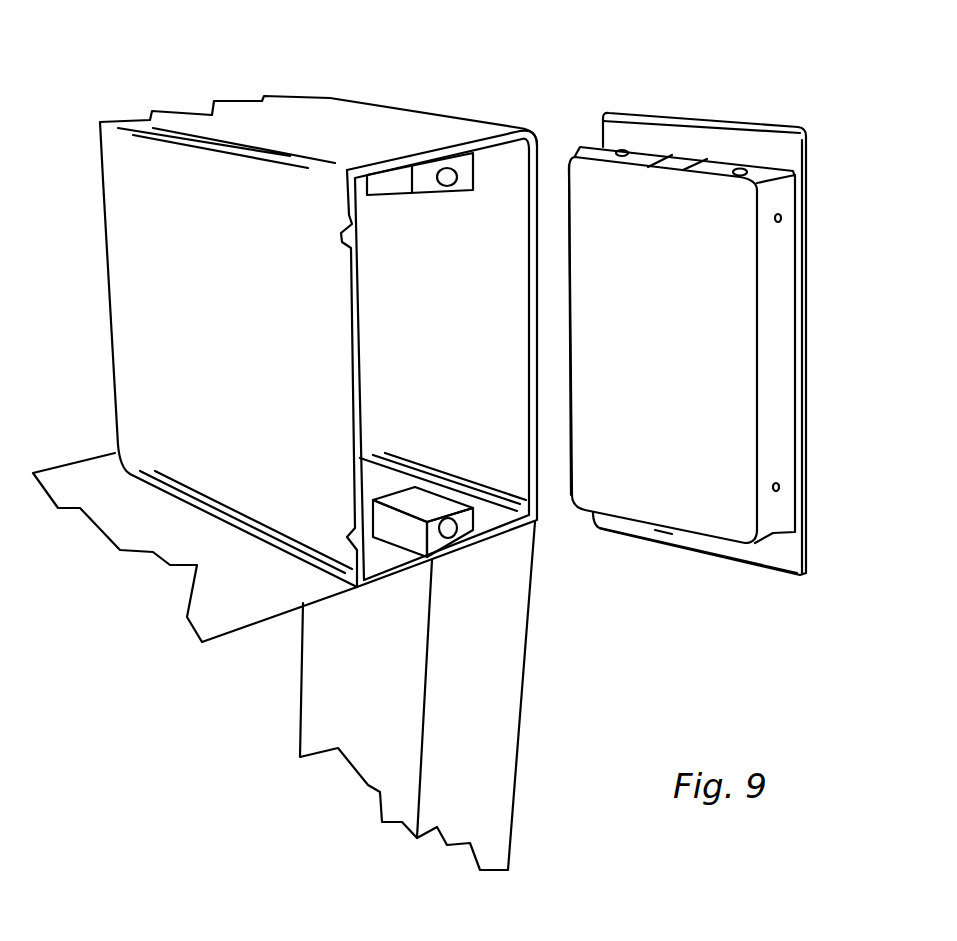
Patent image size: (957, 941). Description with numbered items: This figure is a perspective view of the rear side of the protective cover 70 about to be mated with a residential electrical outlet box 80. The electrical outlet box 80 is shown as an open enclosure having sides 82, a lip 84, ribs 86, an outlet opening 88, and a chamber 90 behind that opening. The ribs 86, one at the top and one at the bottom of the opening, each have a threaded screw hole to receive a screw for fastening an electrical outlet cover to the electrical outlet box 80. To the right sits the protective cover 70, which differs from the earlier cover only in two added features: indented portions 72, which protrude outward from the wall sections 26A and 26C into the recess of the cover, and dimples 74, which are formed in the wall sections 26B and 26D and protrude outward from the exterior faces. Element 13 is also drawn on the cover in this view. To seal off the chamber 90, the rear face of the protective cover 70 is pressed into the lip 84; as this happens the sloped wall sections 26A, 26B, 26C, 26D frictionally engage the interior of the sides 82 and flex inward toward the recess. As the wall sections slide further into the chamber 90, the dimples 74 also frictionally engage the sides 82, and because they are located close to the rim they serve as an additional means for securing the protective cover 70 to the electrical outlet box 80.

The residential electrical outlet box 80 is at (193, 86).
The sides 82 is at (286, 122).
The lip 84 is at (342, 224).
The ribs 86 is at (458, 172).
The outlet opening 88 is at (518, 278).
The chamber 90 is at (462, 298).
The protective cover 70 is at (696, 88).
The indented portions 72 is at (678, 160).
The mounting plate 13 is at (686, 213).
The dimples 74 is at (782, 220).
The wall section 26A is at (623, 527).
The wall section 26B is at (566, 195).
The wall section 26C is at (712, 163).
The wall section 26D is at (780, 378).